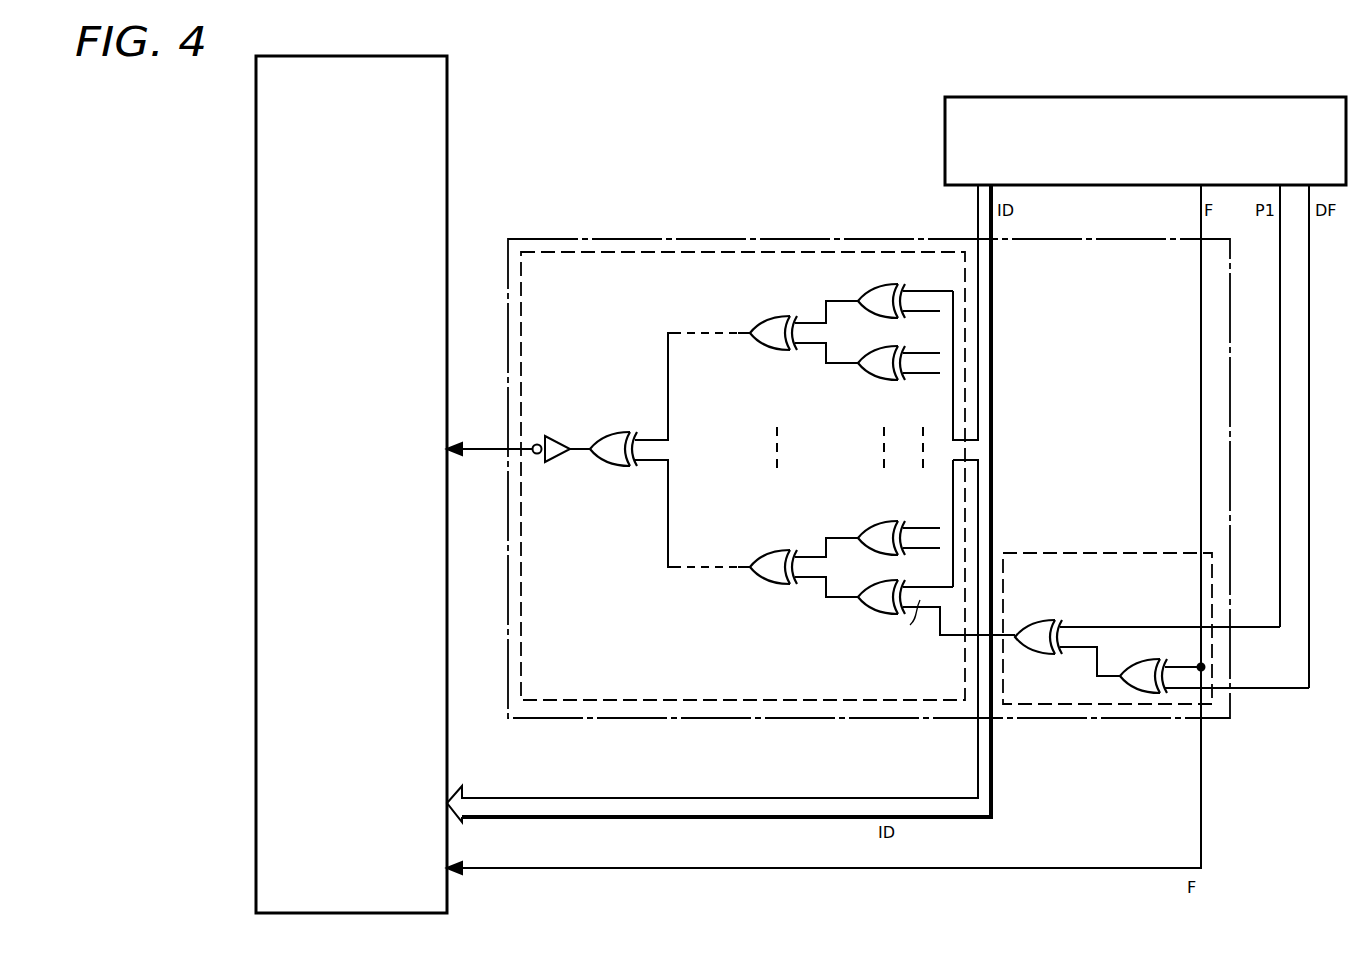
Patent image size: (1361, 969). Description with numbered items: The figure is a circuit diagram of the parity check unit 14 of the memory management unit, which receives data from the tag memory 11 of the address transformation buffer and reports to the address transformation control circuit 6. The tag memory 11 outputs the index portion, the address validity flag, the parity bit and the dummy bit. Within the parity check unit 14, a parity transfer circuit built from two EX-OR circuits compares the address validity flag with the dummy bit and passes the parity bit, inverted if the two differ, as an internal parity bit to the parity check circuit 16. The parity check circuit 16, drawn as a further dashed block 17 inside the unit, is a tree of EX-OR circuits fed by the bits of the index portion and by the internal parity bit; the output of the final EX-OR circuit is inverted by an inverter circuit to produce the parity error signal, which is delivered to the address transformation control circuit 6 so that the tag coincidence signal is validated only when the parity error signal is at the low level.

The address transformation control circuit 6 is at (405, 56).
The tag memory 11 is at (1290, 97).
The parity check unit 14 is at (640, 239).
The parity check circuit 16 is at (1133, 553).
The parity check circuit 17 is at (735, 252).